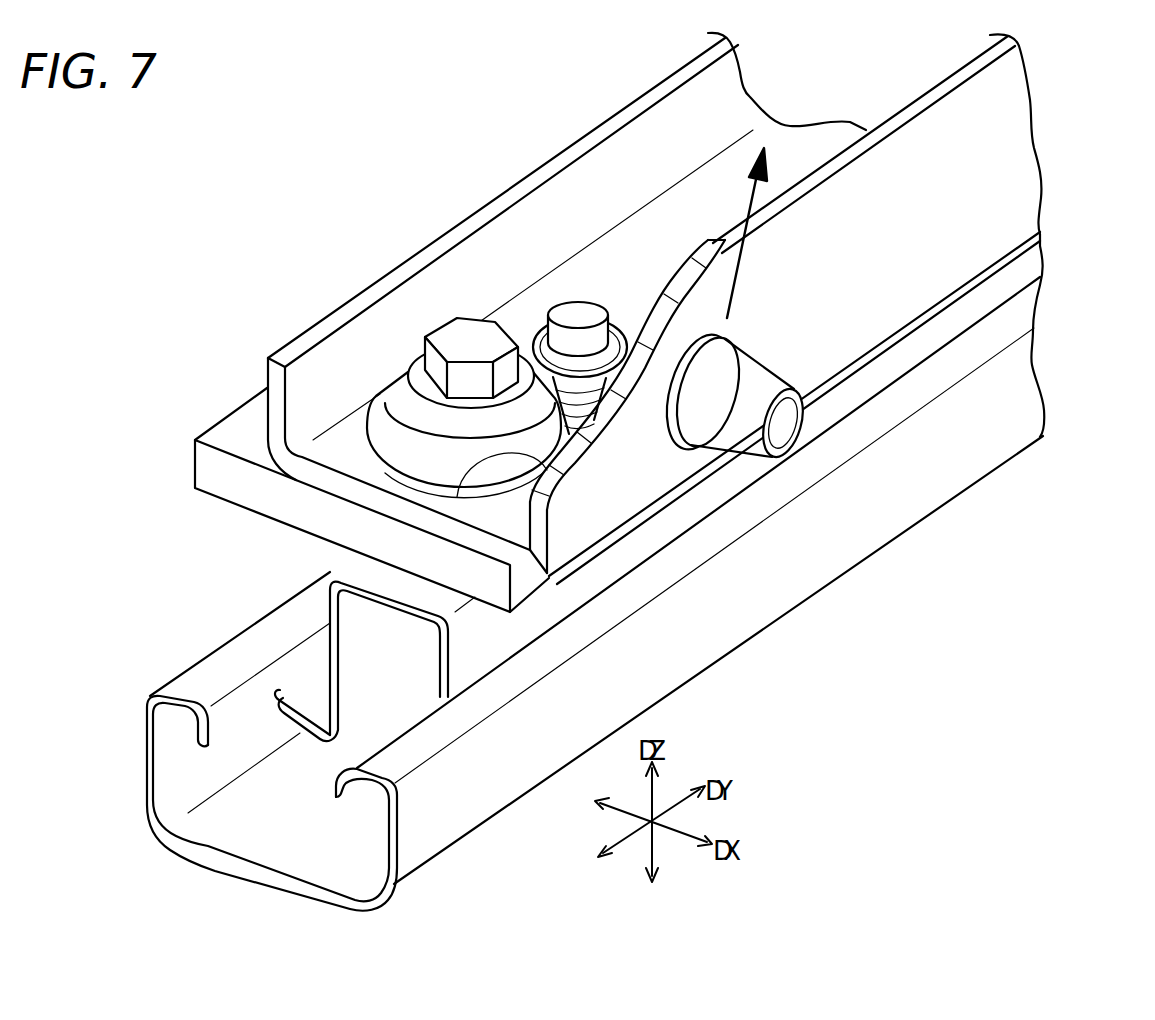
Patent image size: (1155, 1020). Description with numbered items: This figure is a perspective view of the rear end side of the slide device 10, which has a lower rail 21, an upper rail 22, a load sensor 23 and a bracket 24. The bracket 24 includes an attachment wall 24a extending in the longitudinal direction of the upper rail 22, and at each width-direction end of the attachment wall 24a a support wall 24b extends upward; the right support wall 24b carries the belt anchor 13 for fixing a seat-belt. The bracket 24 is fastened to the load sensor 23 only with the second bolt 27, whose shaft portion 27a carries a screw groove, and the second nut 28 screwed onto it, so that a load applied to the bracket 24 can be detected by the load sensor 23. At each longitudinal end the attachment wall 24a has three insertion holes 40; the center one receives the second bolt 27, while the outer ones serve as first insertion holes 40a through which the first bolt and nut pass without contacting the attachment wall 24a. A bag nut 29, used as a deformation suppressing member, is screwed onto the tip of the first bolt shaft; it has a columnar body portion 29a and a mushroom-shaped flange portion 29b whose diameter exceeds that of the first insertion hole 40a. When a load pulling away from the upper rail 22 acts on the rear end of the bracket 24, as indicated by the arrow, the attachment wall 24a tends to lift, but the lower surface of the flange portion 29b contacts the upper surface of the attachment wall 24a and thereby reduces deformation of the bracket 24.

The slide device 10 is at (694, 308).
The belt anchor 13 is at (750, 365).
The lower rail 21 is at (270, 849).
The upper rail 22 is at (330, 601).
The load sensor 23 is at (195, 463).
The bracket 24 is at (694, 308).
The attachment wall 24a is at (817, 128).
The support wall 24b is at (628, 154).
The second bolt 27 is at (592, 338).
The shaft portion 27a is at (600, 328).
The second nut 28 is at (535, 372).
The bag nut 29 is at (414, 378).
The body portion 29a is at (444, 340).
The flange portion 29b is at (367, 437).
The insertion hole 40 is at (627, 406).
The first insertion hole 40a is at (550, 478).